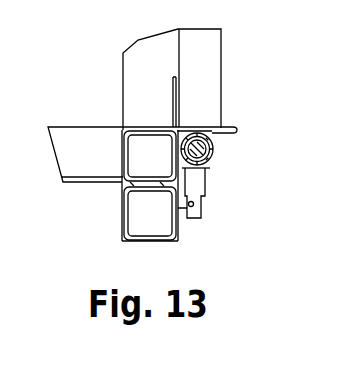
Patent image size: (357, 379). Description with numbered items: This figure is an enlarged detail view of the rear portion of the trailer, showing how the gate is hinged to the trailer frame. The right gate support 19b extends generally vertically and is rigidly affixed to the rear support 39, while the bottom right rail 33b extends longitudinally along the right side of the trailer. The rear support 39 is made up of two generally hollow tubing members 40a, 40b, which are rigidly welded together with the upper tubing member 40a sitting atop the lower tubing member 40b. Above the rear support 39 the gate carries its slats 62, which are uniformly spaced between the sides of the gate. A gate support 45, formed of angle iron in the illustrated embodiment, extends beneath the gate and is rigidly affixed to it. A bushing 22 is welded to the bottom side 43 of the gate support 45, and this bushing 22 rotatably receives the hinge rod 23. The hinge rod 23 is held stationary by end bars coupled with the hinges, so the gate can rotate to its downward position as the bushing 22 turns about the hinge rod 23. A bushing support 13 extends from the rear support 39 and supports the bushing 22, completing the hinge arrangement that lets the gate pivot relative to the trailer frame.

The right gate support 19b is at (133, 41).
The slats 62 is at (211, 55).
The bottom side 43 is at (234, 133).
The gate support 45 is at (177, 107).
The bottom right rail 33b is at (103, 162).
The rear support 39 is at (118, 168).
The tubing member 40a is at (166, 163).
The tubing member 40b is at (166, 219).
The hinge rod 23 is at (212, 150).
The bushing 22 is at (213, 157).
The bushing support 13 is at (205, 172).